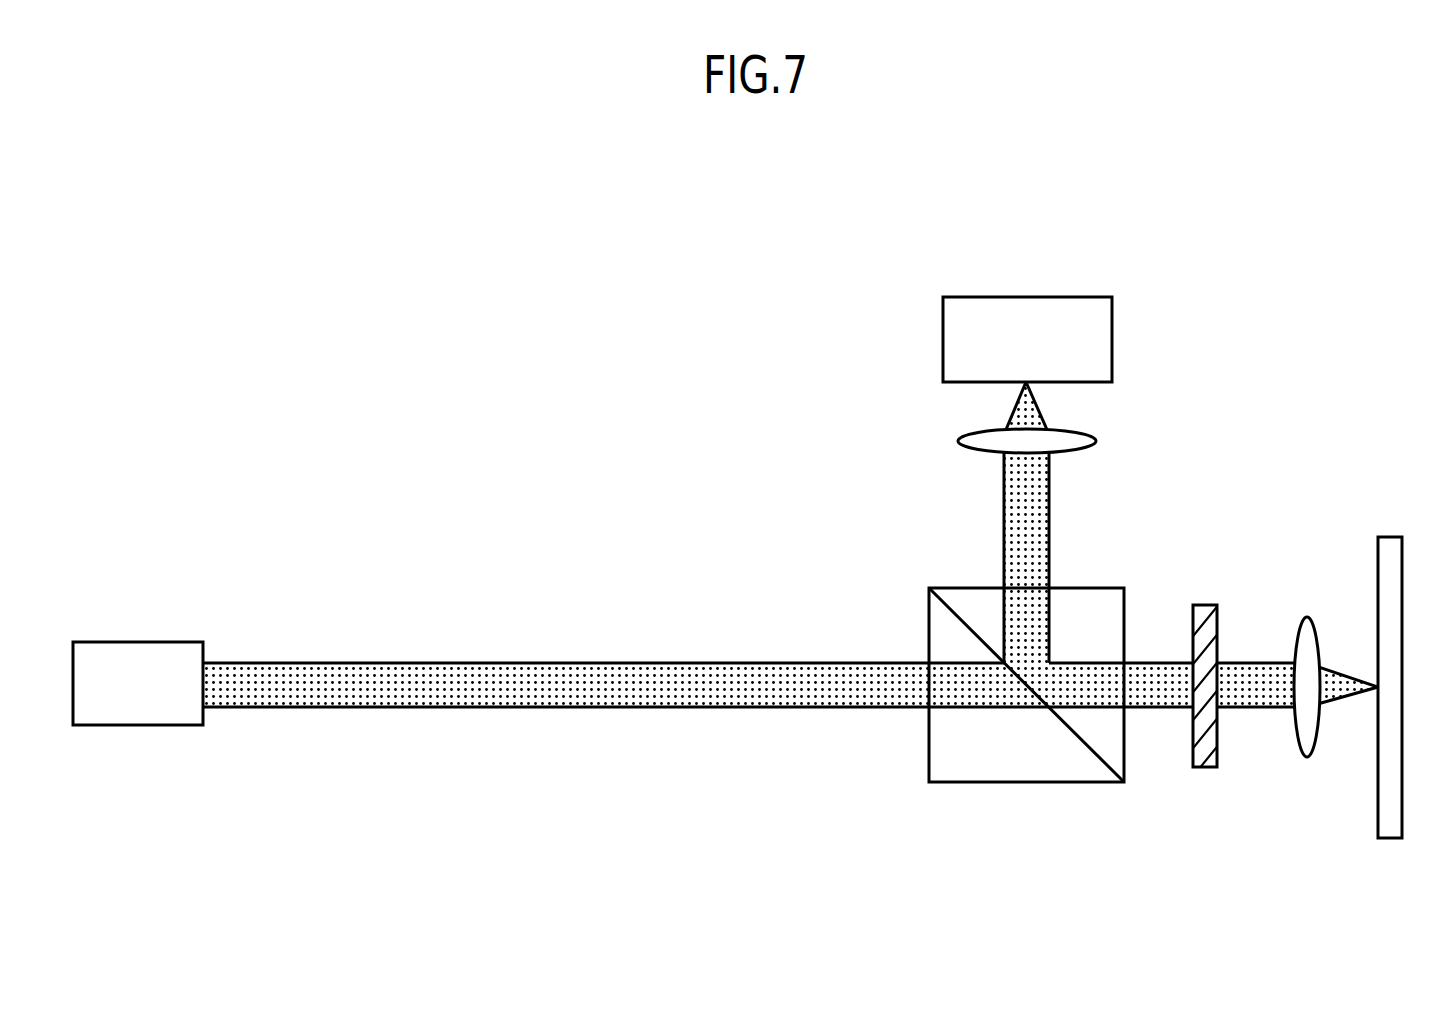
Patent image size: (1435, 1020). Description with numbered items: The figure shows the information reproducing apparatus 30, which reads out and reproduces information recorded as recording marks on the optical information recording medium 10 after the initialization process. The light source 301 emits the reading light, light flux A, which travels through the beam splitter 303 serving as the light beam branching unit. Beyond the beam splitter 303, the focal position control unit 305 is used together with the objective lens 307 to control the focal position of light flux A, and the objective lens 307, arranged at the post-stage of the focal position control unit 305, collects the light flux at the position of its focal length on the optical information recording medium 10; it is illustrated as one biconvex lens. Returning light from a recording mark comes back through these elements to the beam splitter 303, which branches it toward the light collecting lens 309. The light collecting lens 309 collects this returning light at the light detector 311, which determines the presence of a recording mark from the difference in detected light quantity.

The information reproducing apparatus 30 is at (657, 233).
The light source 301 is at (140, 642).
The beam splitter 303 is at (1019, 783).
The focal position control unit 305 is at (1206, 605).
The objective lens 307 is at (1307, 617).
The light collecting lens 309 is at (1094, 433).
The light detector 311 is at (1027, 297).
The optical information recording medium 10 is at (1391, 537).